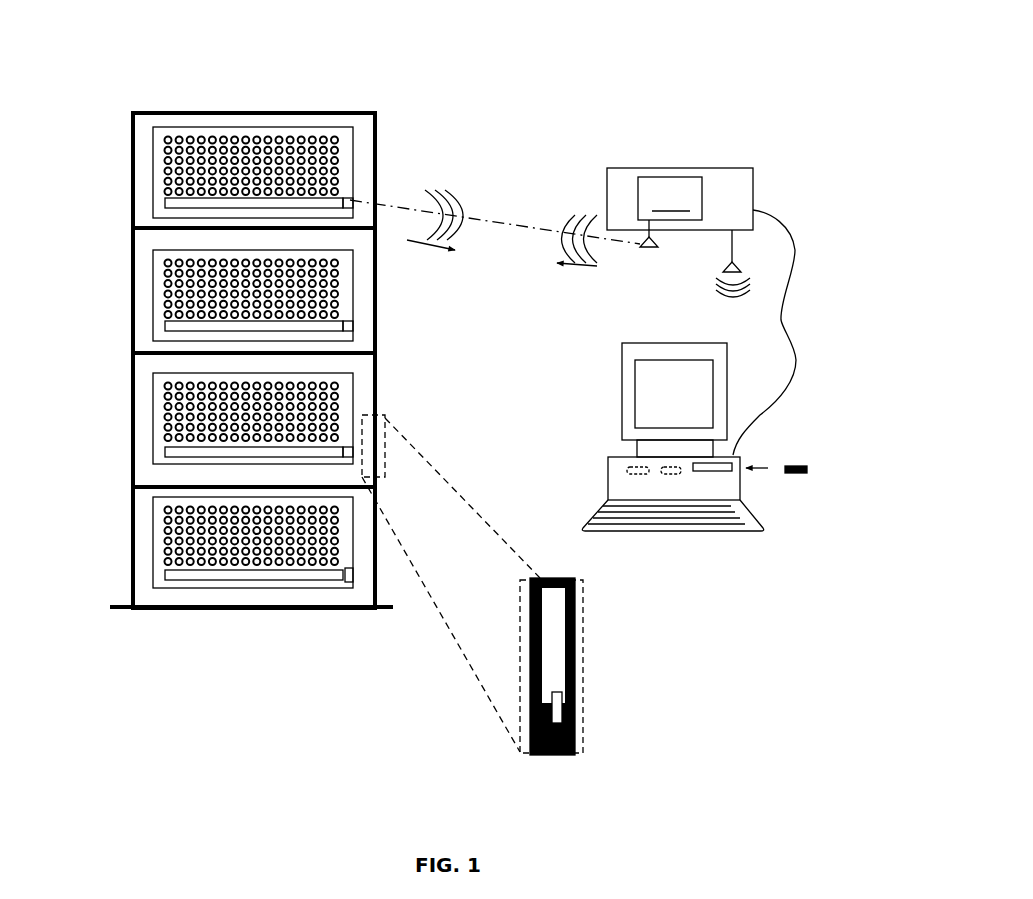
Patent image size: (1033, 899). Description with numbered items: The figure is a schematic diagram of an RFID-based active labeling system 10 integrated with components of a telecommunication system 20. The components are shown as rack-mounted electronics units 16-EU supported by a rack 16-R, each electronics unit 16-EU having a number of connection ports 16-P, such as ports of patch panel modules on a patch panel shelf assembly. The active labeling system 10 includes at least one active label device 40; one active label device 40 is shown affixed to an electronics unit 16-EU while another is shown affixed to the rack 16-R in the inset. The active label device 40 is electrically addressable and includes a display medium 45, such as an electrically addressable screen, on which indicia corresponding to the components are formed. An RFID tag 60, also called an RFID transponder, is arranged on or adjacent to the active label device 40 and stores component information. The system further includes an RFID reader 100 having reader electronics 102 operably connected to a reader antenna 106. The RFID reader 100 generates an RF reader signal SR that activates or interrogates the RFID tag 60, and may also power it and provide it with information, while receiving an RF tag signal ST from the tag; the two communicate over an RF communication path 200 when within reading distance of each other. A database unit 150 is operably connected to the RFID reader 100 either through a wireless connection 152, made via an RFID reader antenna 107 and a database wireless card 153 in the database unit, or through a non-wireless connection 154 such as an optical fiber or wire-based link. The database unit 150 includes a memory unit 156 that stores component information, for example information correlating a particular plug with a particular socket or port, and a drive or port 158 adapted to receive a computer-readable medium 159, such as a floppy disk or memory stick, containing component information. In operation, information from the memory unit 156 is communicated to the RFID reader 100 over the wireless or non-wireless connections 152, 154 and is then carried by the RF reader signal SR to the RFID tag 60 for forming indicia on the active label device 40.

The active labeling system 10 is at (608, 60).
The telecommunication system 20 is at (281, 68).
The rack 16-R is at (200, 106).
The connection ports 16-P is at (165, 148).
The electronics unit 16-EU is at (153, 165).
The active label device 40 is at (182, 208).
The RFID tag 60 is at (346, 200).
The display medium 45 is at (553, 646).
The RF communication path 200 is at (490, 218).
The RF tag signal ST is at (432, 178).
The RF reader signal SR is at (588, 204).
The RFID reader 100 is at (706, 168).
The reader electronics 102 is at (670, 198).
The reader antenna 106 is at (649, 247).
The RFID reader antenna 107 is at (738, 270).
The wireless connection 152 is at (718, 297).
The non-wireless connection 154 is at (800, 331).
The database unit 150 is at (656, 340).
The memory unit 156 is at (662, 466).
The database wireless card 153 is at (632, 470).
The drive or port 158 is at (718, 470).
The computer-readable medium 159 is at (793, 466).